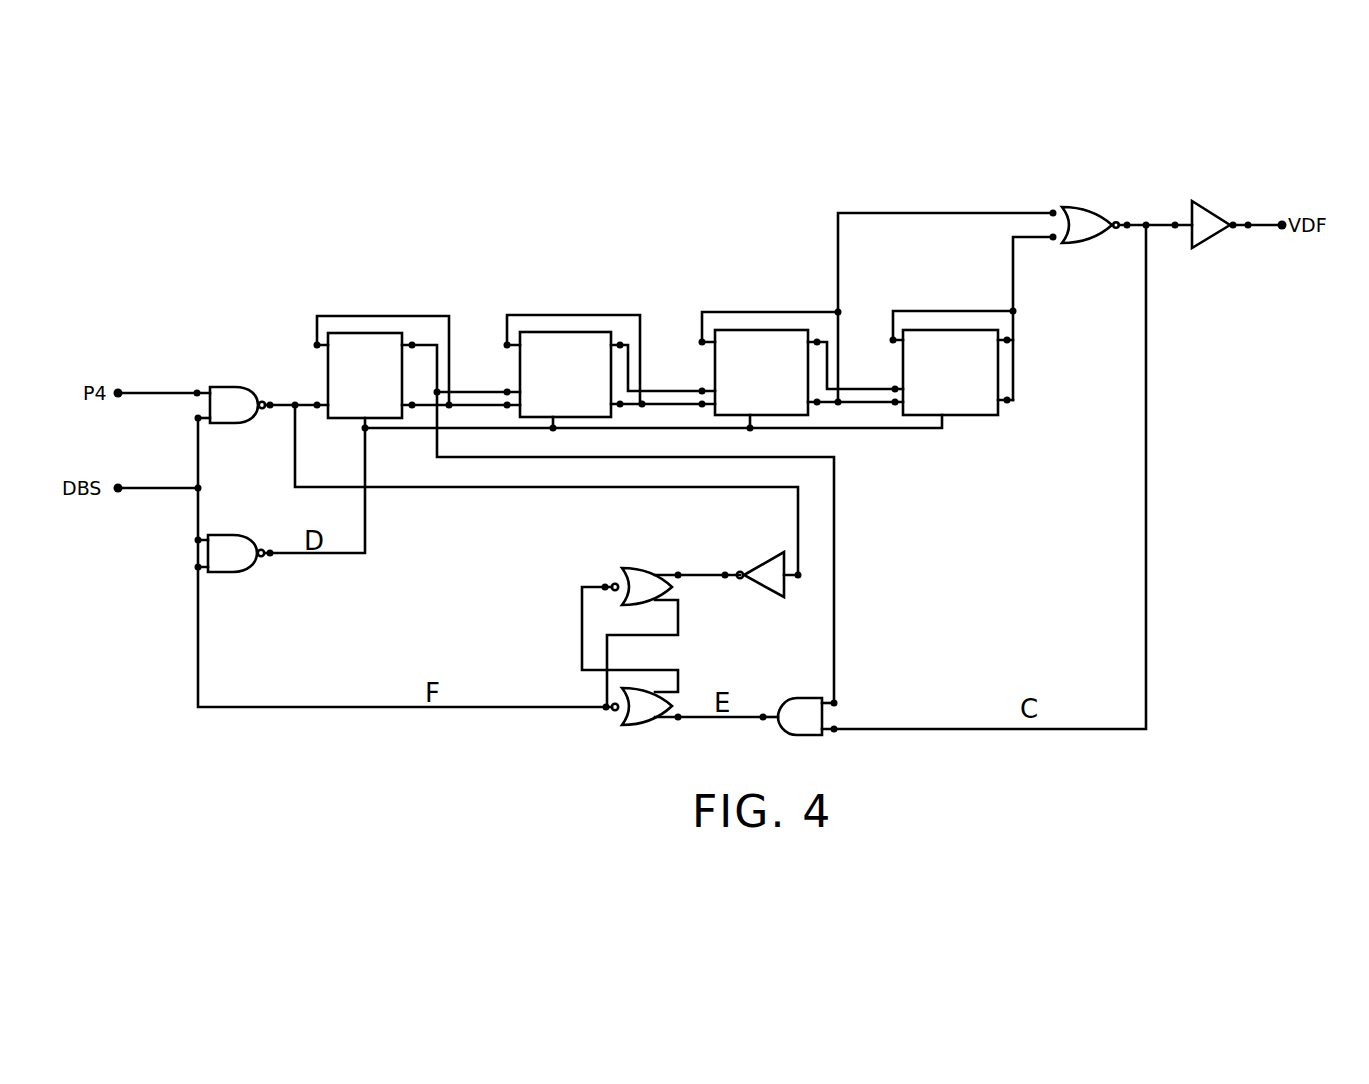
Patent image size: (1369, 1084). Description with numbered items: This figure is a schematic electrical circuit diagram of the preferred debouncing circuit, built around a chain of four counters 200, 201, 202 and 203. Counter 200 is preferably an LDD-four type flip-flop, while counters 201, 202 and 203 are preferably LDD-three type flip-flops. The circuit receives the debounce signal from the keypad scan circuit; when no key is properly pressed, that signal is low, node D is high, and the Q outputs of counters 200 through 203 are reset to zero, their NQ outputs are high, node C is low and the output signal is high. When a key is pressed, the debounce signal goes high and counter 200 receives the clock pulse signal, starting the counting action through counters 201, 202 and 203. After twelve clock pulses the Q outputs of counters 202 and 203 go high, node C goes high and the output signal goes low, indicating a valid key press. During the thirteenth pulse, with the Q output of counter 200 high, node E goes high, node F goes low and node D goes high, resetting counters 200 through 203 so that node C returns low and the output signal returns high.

The counter 200 is at (383, 341).
The counter 201 is at (567, 341).
The counter 202 is at (763, 338).
The counter 203 is at (952, 338).